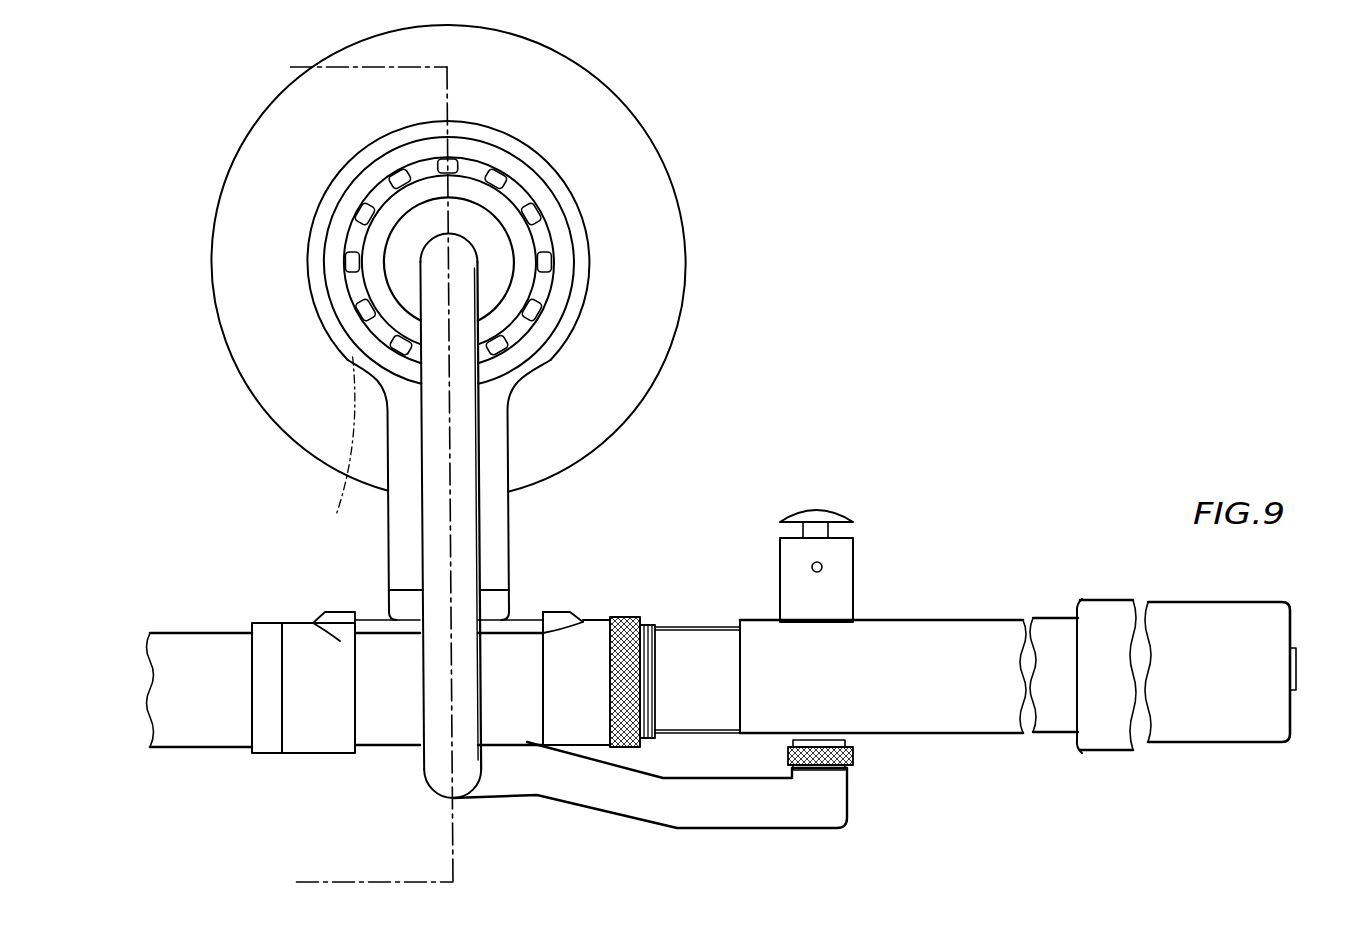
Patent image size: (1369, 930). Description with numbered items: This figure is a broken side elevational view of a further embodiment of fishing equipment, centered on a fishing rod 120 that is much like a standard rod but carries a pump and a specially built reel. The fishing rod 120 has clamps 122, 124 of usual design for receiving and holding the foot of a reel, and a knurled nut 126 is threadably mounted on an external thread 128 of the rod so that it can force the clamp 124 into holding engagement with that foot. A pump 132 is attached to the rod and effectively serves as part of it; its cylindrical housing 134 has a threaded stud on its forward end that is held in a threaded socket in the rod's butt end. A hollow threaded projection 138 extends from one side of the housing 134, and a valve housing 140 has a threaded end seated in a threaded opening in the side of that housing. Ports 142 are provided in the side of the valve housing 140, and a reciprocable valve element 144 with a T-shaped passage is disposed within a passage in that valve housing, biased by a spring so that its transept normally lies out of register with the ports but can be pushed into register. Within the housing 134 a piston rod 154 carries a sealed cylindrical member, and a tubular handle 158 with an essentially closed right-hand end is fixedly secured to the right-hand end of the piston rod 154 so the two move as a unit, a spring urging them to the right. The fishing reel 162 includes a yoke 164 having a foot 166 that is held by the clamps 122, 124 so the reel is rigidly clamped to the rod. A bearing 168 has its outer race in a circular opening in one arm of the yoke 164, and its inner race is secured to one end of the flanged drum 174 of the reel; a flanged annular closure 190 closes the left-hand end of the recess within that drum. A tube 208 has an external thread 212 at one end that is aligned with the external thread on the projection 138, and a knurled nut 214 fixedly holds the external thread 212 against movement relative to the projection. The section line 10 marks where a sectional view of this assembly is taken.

The section line 10- 10 is at (292, 68).
The fishing rod 120 is at (240, 748).
The clamp 122 is at (342, 740).
The clamp 124 is at (583, 617).
The knurled nut 126 is at (627, 612).
The external thread 128 is at (647, 622).
The pump 132 is at (1002, 598).
The cylindrical housing 134 is at (1067, 720).
The hollow threaded projection 138 is at (845, 743).
The valve housing 140 is at (853, 544).
The ports 142 is at (822, 571).
The reciprocable valve element 144 is at (823, 508).
The piston rod 154 is at (1295, 658).
The handle 158 is at (1190, 720).
The fishing reel 162 is at (728, 263).
The yoke 164 is at (384, 530).
The foot 166 is at (523, 622).
The bearing 168 is at (522, 238).
The flanged drum 174 is at (638, 167).
The flanged annular closure 190 is at (402, 270).
The tube 208 is at (620, 827).
The external thread 212 is at (845, 769).
The knurled nut 214 is at (788, 755).